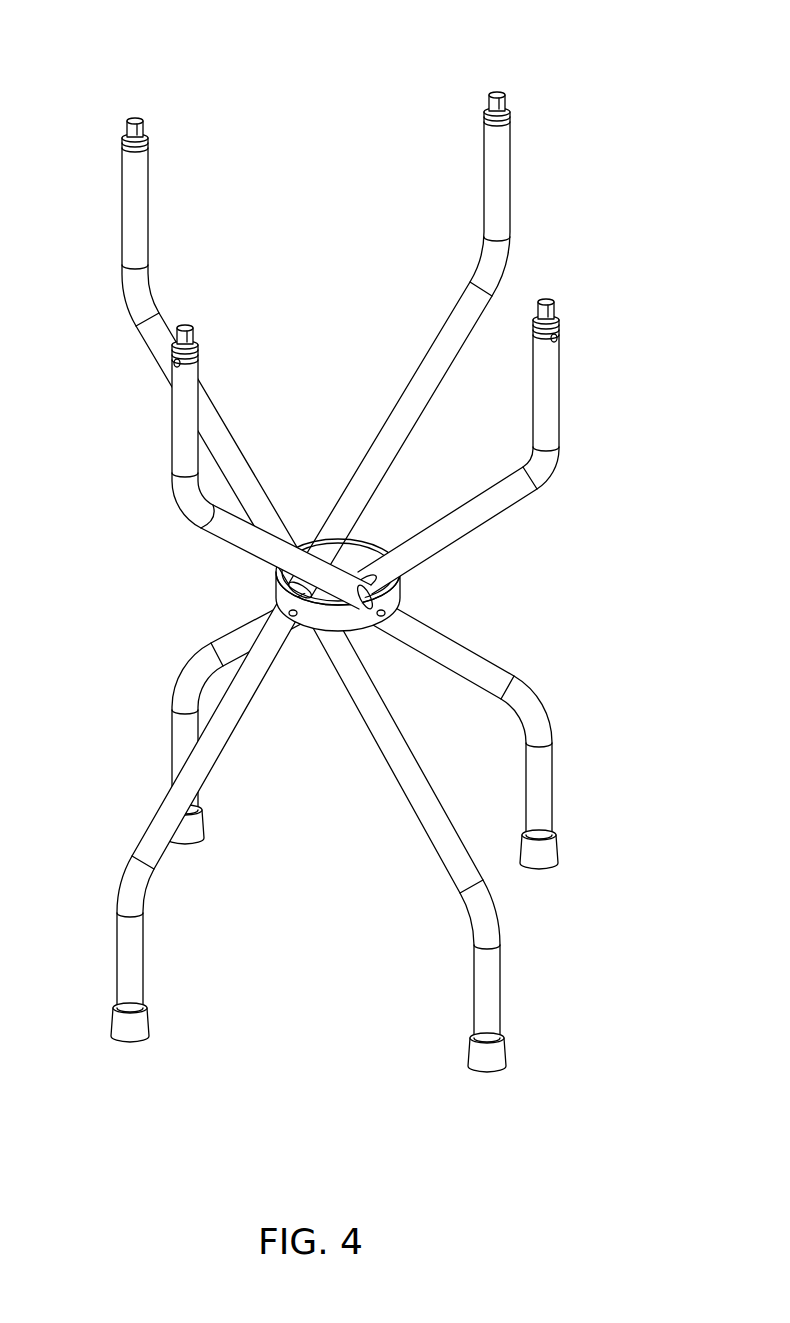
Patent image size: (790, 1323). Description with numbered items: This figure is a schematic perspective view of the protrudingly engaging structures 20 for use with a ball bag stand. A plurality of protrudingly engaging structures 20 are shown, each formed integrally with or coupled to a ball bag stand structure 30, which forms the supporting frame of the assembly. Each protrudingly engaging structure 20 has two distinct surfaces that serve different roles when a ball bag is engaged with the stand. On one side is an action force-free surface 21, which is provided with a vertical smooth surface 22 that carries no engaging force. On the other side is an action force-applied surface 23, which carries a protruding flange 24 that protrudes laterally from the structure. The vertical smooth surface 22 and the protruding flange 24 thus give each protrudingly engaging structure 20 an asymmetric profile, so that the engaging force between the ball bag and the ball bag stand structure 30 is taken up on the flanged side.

The protrudingly engaging structure 20 is at (127, 122).
The action force-free surface 21 is at (148, 131).
The vertical smooth surface 22 is at (150, 139).
The action force-applied surface 23 is at (177, 348).
The protruding flange 24 is at (180, 337).
The ball bag stand structure 30 is at (205, 752).